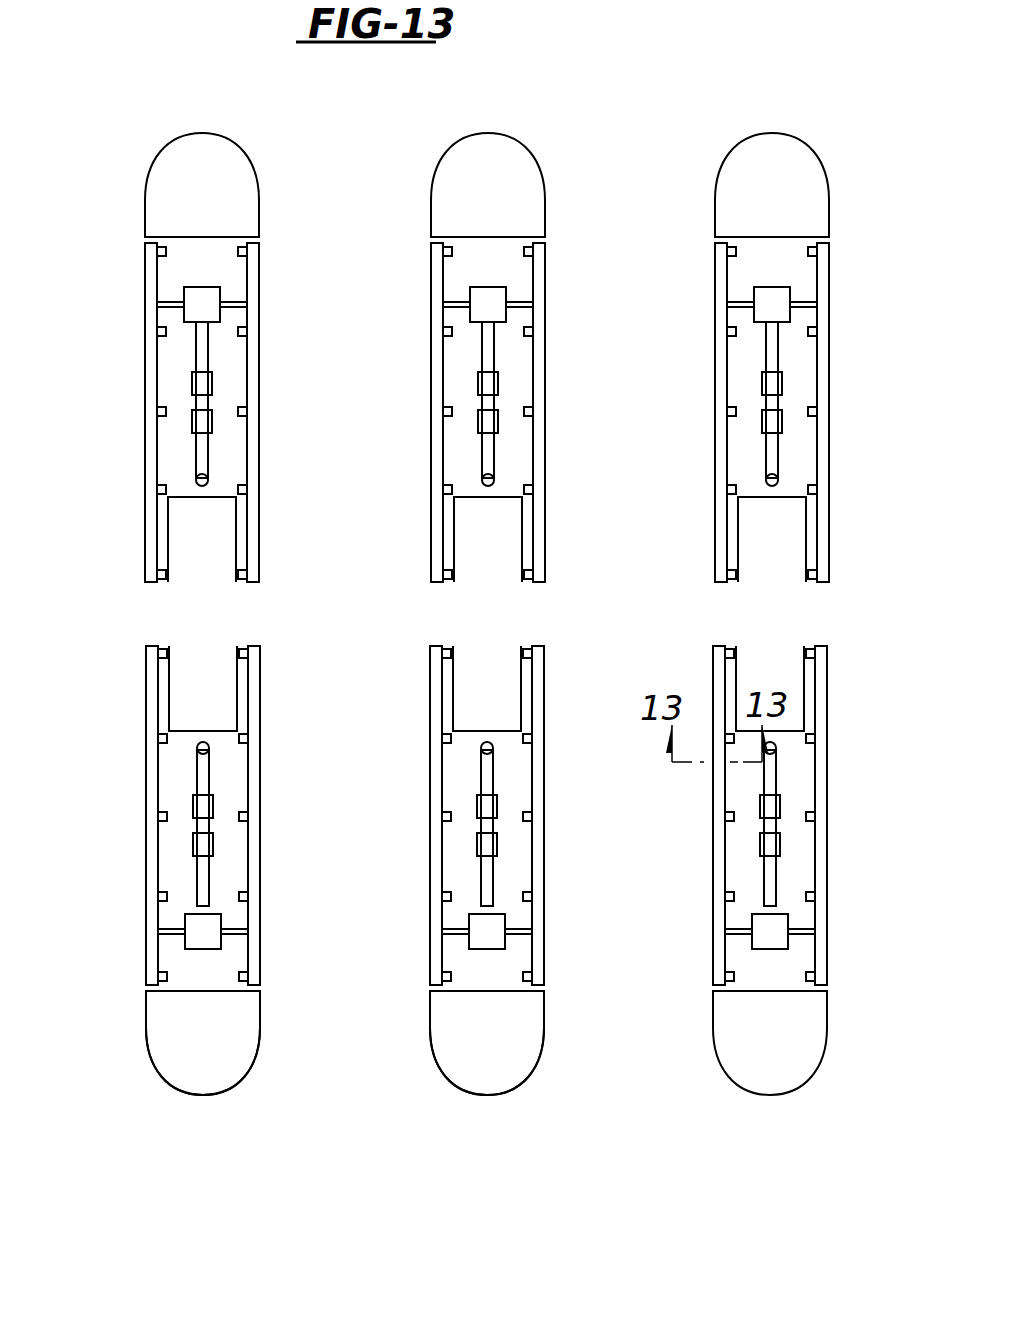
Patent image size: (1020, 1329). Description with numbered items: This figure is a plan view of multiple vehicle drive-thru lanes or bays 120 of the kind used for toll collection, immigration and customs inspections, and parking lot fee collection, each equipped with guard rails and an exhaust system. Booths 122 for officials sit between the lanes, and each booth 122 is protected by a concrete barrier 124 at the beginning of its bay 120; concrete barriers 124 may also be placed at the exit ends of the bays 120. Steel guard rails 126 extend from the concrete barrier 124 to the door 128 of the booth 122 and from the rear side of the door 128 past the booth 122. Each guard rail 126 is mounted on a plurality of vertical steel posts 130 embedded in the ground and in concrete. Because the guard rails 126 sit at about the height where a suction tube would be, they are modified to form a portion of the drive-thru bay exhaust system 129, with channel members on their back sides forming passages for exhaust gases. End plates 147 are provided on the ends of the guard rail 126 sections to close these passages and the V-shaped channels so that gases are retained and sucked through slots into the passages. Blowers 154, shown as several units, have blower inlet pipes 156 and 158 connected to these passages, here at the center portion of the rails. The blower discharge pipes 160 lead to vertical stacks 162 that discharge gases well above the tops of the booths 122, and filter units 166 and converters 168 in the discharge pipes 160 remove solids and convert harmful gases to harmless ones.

The drive-thru lane or bay 120 is at (349, 1065).
The booth 122 is at (238, 525).
The concrete barrier 124 is at (208, 137).
The steel guard rail 126 is at (147, 249).
The door 128 is at (262, 617).
The drive-thru bay exhaust system 129 is at (265, 337).
The vertical steel post 130 is at (245, 397).
The end plate 147 is at (818, 641).
The blower 154 is at (191, 291).
The blower inlet pipe 156 is at (240, 303).
The blower inlet pipe 158 is at (454, 303).
The blower discharge pipe 160 is at (496, 343).
The vertical stack 162 is at (194, 486).
The filter unit 166 is at (211, 383).
The converter 168 is at (212, 421).